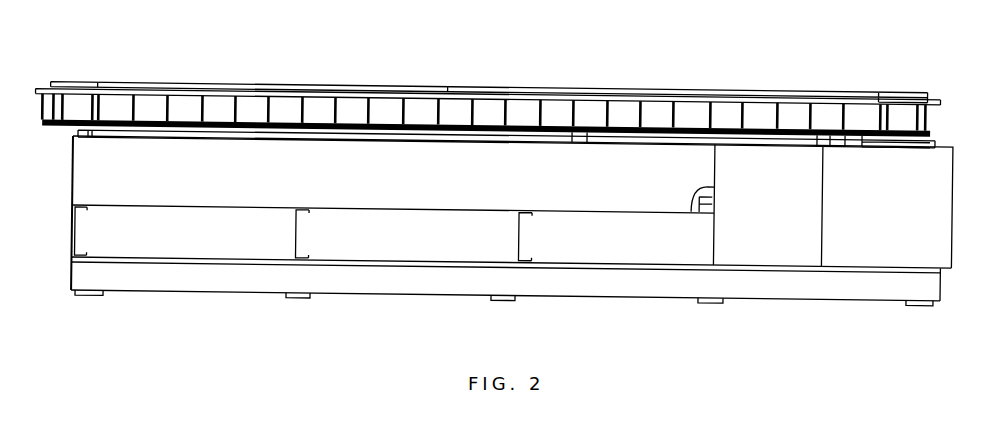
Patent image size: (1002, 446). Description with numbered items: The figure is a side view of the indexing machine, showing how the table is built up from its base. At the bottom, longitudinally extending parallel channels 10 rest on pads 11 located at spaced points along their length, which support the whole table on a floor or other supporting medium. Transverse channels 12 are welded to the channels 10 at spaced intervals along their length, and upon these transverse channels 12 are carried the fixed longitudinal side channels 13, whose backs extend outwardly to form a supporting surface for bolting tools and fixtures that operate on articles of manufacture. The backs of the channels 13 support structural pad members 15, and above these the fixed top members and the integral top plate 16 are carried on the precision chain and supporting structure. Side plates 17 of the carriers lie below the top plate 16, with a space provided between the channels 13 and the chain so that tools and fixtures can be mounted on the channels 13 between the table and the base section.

The longitudinally extending parallel channels 10 is at (937, 285).
The pads 11 is at (512, 296).
The transverse channels 12 is at (299, 229).
The longitudinal side channels 13 is at (77, 197).
The structural pad members 15 is at (73, 137).
The top plate 16 is at (245, 86).
The side plates 17 is at (158, 117).